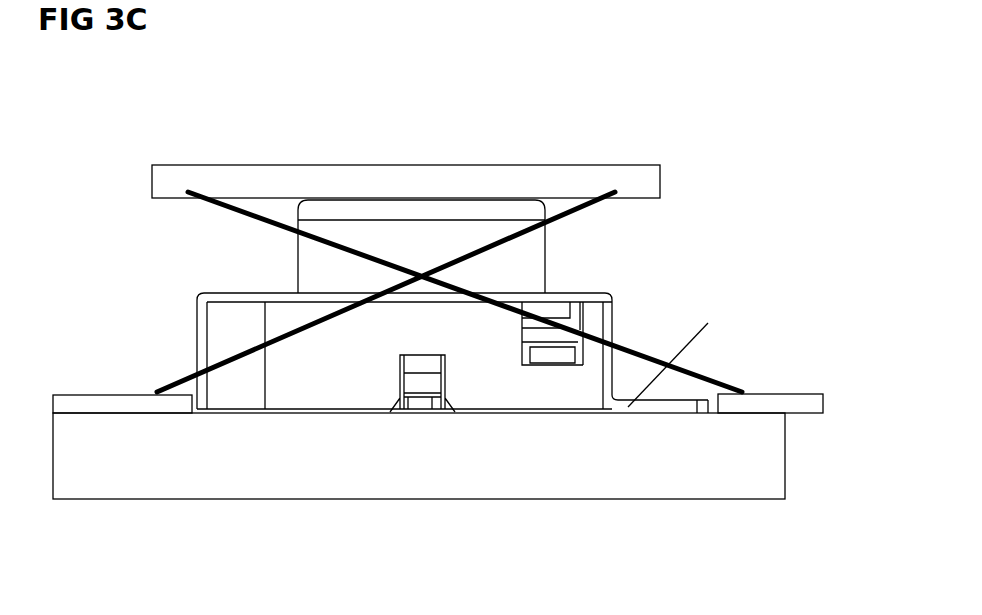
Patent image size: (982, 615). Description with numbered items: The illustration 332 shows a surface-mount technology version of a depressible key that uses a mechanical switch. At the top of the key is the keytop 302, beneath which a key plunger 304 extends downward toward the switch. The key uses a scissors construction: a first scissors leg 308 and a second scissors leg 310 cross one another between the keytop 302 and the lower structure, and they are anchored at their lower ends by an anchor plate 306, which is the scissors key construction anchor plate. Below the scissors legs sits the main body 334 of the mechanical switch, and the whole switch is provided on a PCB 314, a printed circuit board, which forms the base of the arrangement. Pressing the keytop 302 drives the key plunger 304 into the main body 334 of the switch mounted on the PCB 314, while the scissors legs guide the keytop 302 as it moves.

The keytop 302 is at (392, 175).
The key plunger 304 is at (457, 227).
The anchor plate 306 is at (67, 403).
The first scissors leg 308 is at (208, 200).
The second scissors leg 310 is at (622, 347).
The PCB 314 is at (230, 478).
The illustration 332 is at (763, 85).
The main body 334 is at (238, 315).